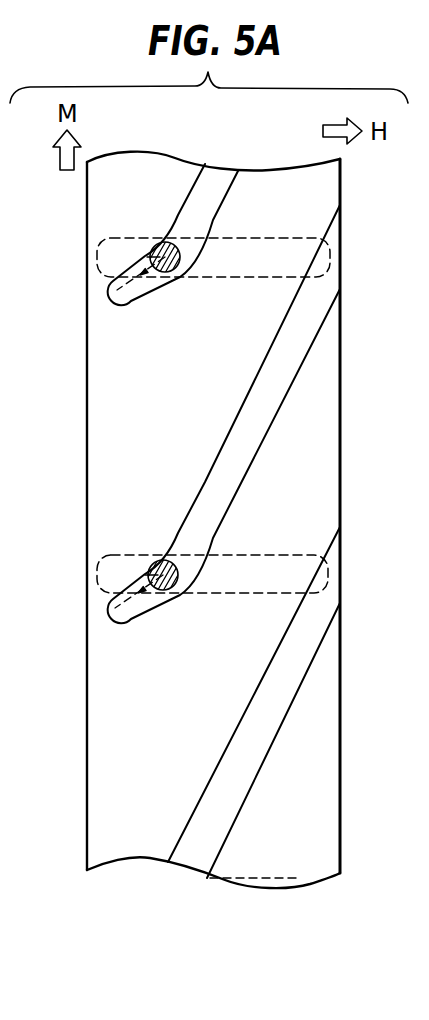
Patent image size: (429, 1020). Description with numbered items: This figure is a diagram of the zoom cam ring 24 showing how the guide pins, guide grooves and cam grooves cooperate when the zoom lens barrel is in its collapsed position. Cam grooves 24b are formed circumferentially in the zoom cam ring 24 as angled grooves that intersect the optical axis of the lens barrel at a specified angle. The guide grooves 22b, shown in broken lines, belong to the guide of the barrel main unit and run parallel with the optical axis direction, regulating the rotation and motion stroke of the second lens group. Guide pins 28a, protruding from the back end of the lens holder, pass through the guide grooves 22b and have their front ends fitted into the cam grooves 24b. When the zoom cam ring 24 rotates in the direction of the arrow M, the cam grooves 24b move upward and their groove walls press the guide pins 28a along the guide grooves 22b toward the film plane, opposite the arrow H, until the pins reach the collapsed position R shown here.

The zoom cam ring 24 is at (308, 740).
The cam grooves 24b is at (293, 346).
The guide grooves 22b is at (262, 266).
The guide pins 28a is at (137, 258).
The collapsed position R is at (148, 543).